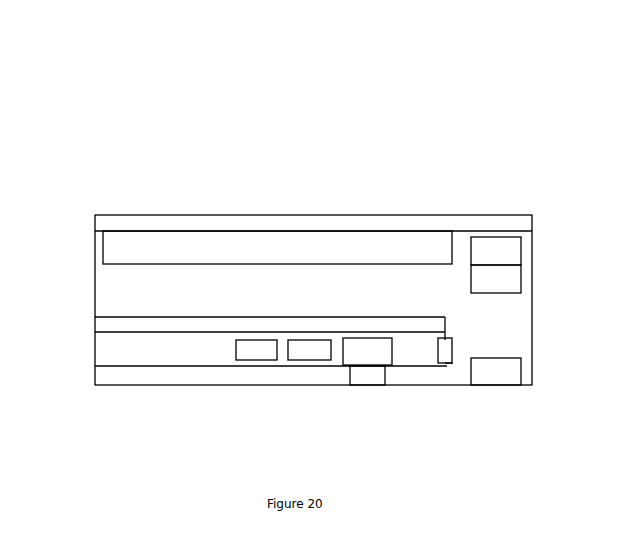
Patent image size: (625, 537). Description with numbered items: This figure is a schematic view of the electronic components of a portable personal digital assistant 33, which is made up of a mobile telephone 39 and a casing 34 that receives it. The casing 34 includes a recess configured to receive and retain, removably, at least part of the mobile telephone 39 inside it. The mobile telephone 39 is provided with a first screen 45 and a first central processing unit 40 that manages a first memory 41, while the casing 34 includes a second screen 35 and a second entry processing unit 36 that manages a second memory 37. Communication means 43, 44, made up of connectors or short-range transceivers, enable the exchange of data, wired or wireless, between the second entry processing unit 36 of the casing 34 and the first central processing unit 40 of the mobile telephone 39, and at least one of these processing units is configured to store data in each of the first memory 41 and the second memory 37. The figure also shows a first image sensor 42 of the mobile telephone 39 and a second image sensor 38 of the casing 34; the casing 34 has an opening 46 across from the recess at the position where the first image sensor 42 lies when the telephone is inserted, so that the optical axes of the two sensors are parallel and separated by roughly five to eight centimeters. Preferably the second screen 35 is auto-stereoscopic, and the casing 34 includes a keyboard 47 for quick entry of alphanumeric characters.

The portable personal digital assistant 33 is at (142, 112).
The casing 34 is at (110, 288).
The second screen 35 is at (192, 222).
The second entry processing unit 36 is at (512, 278).
The second memory 37 is at (512, 250).
The second image sensor 38 is at (520, 373).
The mobile telephone 39 is at (105, 348).
The first central processing unit 40 is at (250, 355).
The first memory 41 is at (305, 353).
The first image sensor 42 is at (365, 347).
The communication means 43 is at (450, 362).
The communication means 44 is at (444, 352).
The first screen 45 is at (107, 327).
The opening 46 is at (367, 378).
The keyboard 47 is at (100, 242).